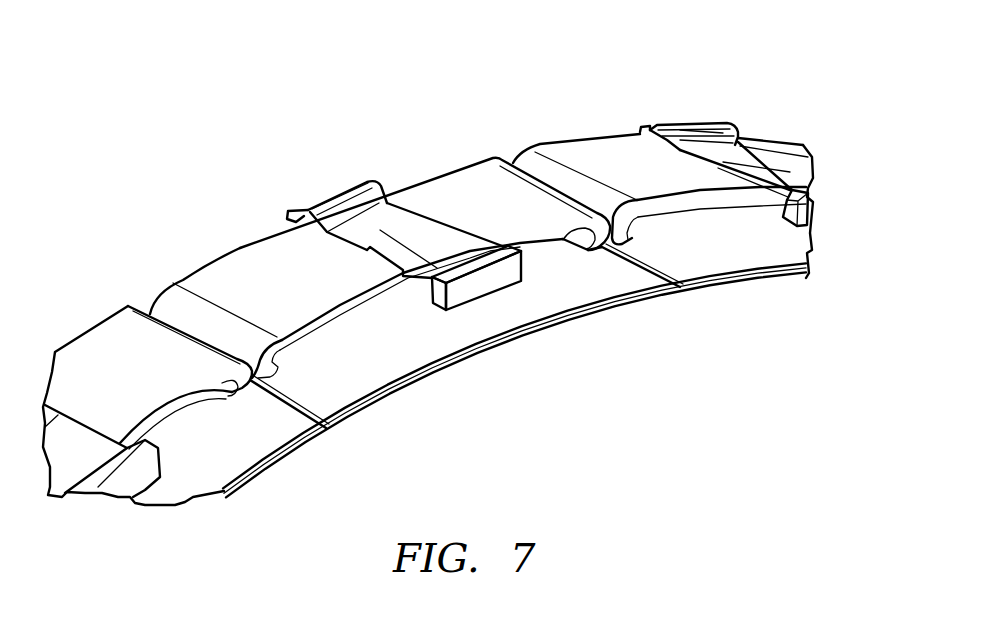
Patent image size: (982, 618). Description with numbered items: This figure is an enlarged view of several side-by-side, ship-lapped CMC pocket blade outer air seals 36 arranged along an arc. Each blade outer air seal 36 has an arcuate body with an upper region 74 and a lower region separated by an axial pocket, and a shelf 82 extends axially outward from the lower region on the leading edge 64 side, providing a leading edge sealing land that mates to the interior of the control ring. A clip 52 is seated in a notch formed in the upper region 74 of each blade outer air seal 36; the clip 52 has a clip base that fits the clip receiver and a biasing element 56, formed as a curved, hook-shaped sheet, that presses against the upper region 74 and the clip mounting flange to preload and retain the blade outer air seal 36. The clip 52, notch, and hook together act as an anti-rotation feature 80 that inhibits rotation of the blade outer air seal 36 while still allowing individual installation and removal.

The blade outer air seal 36 is at (84, 311).
The clip 52 is at (808, 222).
The biasing element 56 is at (362, 182).
The leading edge 64 is at (393, 397).
The upper region 74 is at (312, 277).
The anti-rotation feature 80 is at (424, 199).
The shelf 82 is at (390, 370).